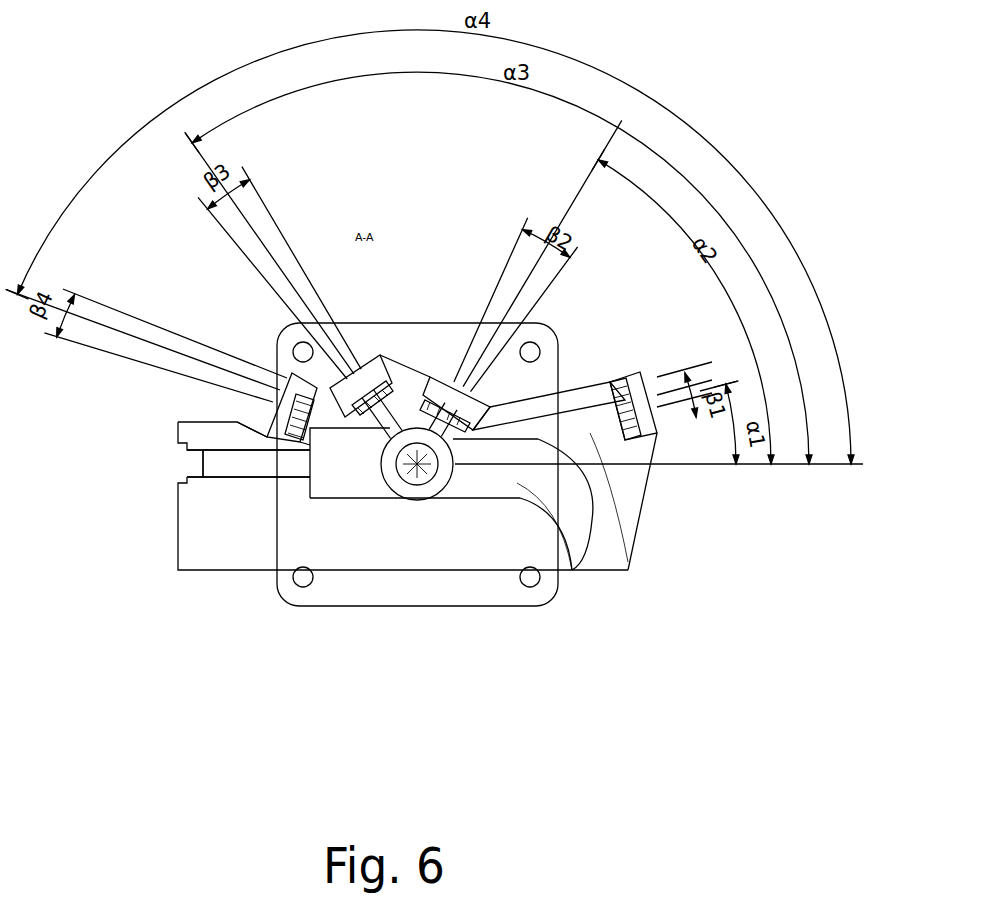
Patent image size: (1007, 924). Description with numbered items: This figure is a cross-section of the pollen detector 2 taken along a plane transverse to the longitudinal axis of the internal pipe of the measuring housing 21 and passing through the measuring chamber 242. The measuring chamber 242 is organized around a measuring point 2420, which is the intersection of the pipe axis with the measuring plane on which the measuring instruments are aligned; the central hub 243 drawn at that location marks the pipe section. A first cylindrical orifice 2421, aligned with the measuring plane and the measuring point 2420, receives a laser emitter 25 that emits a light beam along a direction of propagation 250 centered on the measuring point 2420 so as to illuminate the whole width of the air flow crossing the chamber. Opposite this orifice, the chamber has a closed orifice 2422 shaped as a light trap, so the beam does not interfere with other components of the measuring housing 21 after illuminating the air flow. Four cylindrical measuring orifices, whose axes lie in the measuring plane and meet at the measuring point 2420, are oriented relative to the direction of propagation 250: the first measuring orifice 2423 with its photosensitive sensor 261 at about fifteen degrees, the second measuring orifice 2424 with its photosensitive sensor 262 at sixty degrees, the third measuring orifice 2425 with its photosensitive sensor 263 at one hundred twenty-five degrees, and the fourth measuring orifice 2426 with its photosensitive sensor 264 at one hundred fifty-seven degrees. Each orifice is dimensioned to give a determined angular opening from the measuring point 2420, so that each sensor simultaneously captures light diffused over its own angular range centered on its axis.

The pollen detector 2 is at (103, 560).
The measuring housing 21 is at (220, 553).
The laser emitter 25 is at (178, 467).
The measuring chamber 242 is at (337, 473).
The rotating hub 243 is at (408, 497).
The direction of propagation 250 is at (592, 510).
The photosensitive sensor 261 is at (633, 372).
The photosensitive sensor 262 is at (558, 380).
The photosensitive sensor 263 is at (380, 356).
The photosensitive sensor 264 is at (273, 352).
The measuring point 2420 is at (460, 480).
The first cylindrical orifice 2421 is at (287, 527).
The closed orifice 2422 is at (555, 520).
The first measuring orifice 2423 is at (645, 478).
The second measuring orifice 2424 is at (455, 372).
The third measuring orifice 2425 is at (400, 365).
The fourth measuring orifice 2426 is at (277, 380).